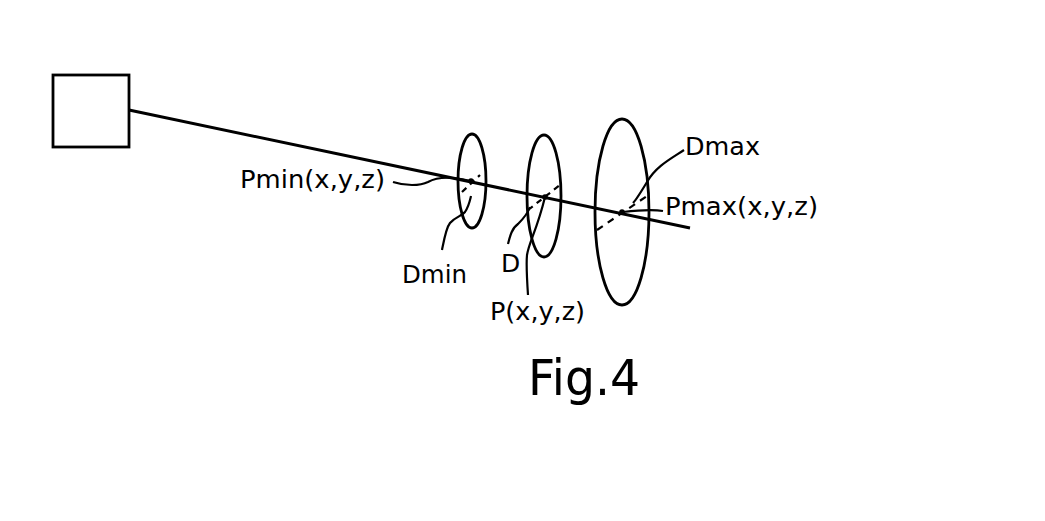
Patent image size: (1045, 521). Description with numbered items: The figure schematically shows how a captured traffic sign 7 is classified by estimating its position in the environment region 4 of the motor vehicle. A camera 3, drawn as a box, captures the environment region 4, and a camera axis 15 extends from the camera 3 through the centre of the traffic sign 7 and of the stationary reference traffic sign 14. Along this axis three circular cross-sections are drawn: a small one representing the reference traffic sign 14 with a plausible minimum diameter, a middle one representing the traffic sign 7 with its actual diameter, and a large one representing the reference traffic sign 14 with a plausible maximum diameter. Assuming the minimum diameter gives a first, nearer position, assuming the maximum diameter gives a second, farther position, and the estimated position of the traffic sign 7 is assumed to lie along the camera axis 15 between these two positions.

The camera 3 is at (83, 83).
The camera axis 15 is at (237, 133).
The environment region 4 is at (657, 39).
The stationary reference traffic sign 14 is at (467, 125).
The traffic sign 7 is at (560, 127).